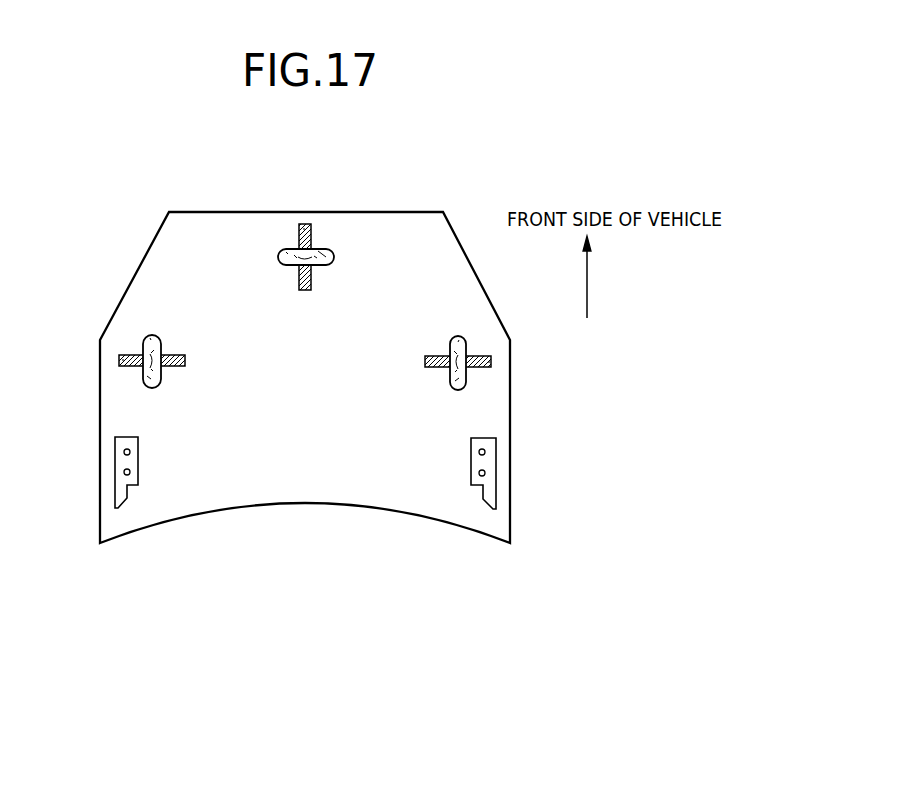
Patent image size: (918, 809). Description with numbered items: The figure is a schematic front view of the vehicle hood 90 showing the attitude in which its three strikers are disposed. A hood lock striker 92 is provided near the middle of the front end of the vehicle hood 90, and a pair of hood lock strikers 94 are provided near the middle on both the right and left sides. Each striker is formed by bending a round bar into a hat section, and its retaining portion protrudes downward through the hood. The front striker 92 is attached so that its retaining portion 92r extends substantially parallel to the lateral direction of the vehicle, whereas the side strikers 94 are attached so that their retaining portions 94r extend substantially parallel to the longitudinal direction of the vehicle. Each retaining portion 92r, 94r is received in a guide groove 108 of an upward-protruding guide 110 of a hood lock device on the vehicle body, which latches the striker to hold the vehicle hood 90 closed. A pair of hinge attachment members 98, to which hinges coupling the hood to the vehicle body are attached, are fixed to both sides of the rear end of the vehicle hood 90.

The vehicle hood 90 is at (417, 170).
The hood lock striker 92 is at (268, 243).
The retaining portion 92r is at (320, 253).
The hood lock striker 94 is at (137, 325).
The retaining portion 94r is at (148, 376).
The hinge attachment member 98 is at (123, 462).
The guide groove 108 is at (291, 250).
The guide 110 is at (305, 242).